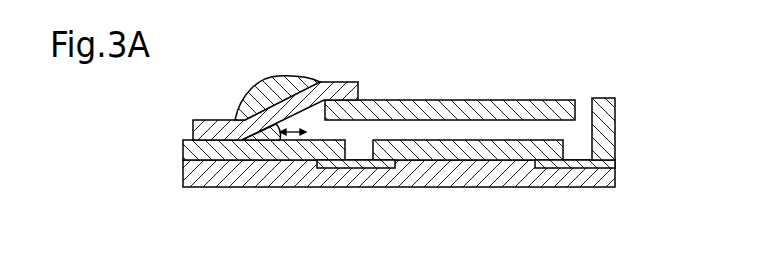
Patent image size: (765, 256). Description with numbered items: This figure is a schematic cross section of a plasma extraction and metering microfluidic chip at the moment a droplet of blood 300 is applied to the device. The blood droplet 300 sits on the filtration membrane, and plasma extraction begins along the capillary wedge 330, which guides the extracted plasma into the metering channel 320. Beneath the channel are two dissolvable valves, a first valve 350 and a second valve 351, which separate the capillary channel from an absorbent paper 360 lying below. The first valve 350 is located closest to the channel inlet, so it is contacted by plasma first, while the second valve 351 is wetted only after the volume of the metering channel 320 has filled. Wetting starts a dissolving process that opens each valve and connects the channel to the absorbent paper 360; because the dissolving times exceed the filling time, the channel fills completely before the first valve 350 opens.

The droplet of blood 300 is at (272, 85).
The metering channel 320 is at (458, 122).
The capillary wedge 330 is at (273, 125).
The first dissolvable valve 350 is at (359, 160).
The second dissolvable valve 351 is at (577, 167).
The absorbent paper 360 is at (200, 186).